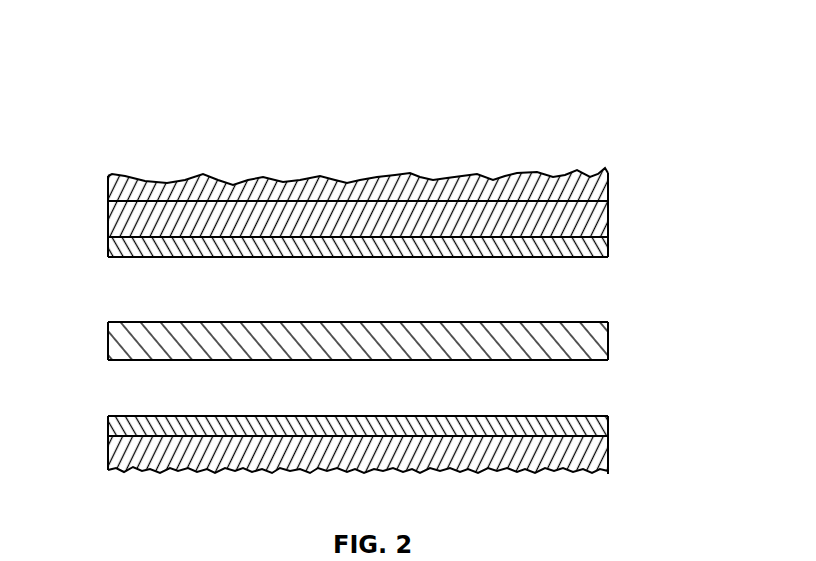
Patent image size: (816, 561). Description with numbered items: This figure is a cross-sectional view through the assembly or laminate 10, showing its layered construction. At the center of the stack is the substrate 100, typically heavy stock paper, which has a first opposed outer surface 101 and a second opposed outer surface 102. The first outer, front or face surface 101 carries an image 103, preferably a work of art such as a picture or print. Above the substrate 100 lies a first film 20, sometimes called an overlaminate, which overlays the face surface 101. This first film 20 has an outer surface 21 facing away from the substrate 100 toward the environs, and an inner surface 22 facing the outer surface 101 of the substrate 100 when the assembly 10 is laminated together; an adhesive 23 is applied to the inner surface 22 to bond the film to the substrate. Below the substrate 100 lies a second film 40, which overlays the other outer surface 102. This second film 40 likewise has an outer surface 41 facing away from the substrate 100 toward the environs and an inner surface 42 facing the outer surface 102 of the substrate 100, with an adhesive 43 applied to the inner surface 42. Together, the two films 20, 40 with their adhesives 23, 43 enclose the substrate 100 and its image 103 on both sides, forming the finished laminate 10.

The assembly or laminate 10 is at (140, 88).
The first film 20 is at (381, 220).
The outer surface 21 is at (333, 181).
The inner surface 22 is at (417, 242).
The adhesive 23 is at (152, 257).
The substrate 100 is at (395, 342).
The first opposed outer surface 101 is at (191, 320).
The second opposed outer surface 102 is at (188, 362).
The image 103 is at (336, 321).
The second film 40 is at (388, 459).
The outer surface 41 is at (428, 474).
The inner surface 42 is at (410, 432).
The adhesive 43 is at (555, 414).